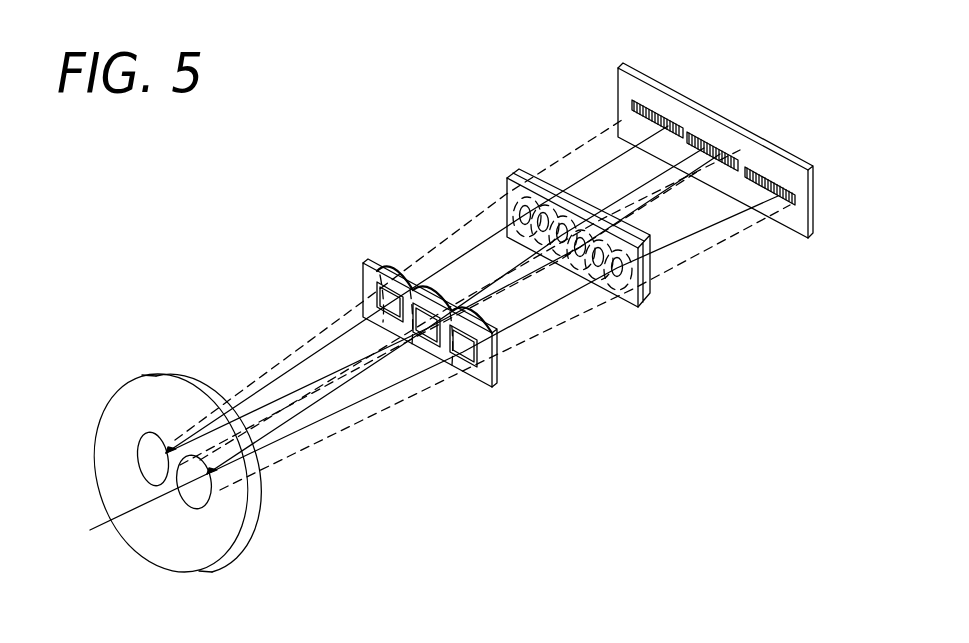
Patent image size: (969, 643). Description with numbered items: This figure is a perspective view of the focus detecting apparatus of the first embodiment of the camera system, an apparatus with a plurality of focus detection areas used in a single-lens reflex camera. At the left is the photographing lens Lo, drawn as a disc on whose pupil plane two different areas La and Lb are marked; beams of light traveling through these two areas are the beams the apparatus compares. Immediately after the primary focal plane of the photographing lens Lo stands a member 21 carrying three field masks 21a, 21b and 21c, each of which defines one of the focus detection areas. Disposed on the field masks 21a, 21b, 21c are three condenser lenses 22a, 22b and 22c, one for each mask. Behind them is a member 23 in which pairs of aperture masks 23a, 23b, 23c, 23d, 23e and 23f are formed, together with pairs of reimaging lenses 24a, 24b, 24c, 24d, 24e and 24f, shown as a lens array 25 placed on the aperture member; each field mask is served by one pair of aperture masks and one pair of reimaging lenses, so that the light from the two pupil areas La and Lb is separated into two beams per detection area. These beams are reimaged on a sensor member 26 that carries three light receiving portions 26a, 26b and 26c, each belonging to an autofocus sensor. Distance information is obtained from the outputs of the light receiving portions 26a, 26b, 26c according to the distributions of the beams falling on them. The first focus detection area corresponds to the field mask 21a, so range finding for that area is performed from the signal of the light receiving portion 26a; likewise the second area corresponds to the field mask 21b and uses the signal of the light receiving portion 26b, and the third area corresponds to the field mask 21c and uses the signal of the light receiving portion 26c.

The photographing lens Lo is at (155, 530).
The pupil plane area La is at (186, 506).
The pupil plane area Lb is at (140, 462).
The field mask plate 21 is at (483, 390).
The field mask 21a is at (360, 288).
The field mask 21b is at (413, 345).
The field mask 21c is at (465, 362).
The condenser lens 22a is at (387, 267).
The condenser lens 22b is at (443, 292).
The condenser lens 22c is at (493, 318).
The aperture stop plate 23 is at (640, 302).
The aperture mask 23a is at (505, 195).
The aperture mask 23b is at (540, 195).
The aperture mask 23c is at (600, 195).
The aperture mask 23d is at (653, 243).
The aperture mask 23e is at (592, 282).
The aperture mask 23f is at (650, 274).
The reimaging lens 24a is at (497, 190).
The reimaging lens 24b is at (590, 190).
The reimaging lens 24c is at (507, 213).
The reimaging lens 24d is at (563, 272).
The reimaging lens 24e is at (610, 290).
The reimaging lens 24f is at (627, 297).
The re-imaging lens array 25 is at (527, 164).
The photoelectric sensor substrate 26 is at (640, 72).
The light receiving portion 26a is at (663, 110).
The light receiving portion 26b is at (708, 137).
The light receiving portion 26c is at (762, 167).